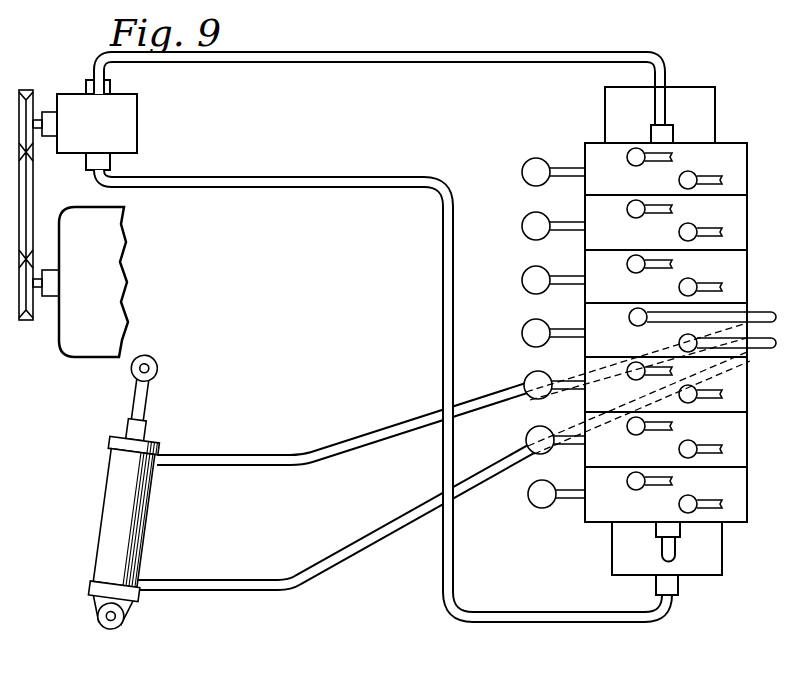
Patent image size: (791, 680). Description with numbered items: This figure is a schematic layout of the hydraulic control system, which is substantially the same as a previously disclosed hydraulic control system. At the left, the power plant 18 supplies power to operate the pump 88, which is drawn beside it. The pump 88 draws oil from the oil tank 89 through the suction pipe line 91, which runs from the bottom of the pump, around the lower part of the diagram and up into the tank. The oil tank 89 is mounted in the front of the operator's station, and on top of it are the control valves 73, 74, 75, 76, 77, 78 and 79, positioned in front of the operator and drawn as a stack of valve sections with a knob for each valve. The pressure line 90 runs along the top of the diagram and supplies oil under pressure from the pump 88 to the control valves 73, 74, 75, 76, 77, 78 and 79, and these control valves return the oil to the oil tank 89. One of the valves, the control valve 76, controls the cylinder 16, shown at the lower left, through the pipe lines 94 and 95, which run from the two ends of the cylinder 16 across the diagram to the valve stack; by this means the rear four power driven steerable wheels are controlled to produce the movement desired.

The cylinder 16 is at (108, 510).
The power plant 18 is at (93, 282).
The control valve 73 is at (522, 170).
The control valve 74 is at (522, 225).
The control valve 75 is at (522, 279).
The control valve 76 is at (522, 332).
The control valve 77 is at (524, 383).
The control valve 78 is at (526, 439).
The control valve 79 is at (528, 493).
The pump 88 is at (97, 125).
The oil tank 89 is at (612, 556).
The pressure line 90 is at (358, 62).
The suction pipe line 91 is at (520, 622).
The pipe line 94 is at (227, 587).
The pipe line 95 is at (233, 466).